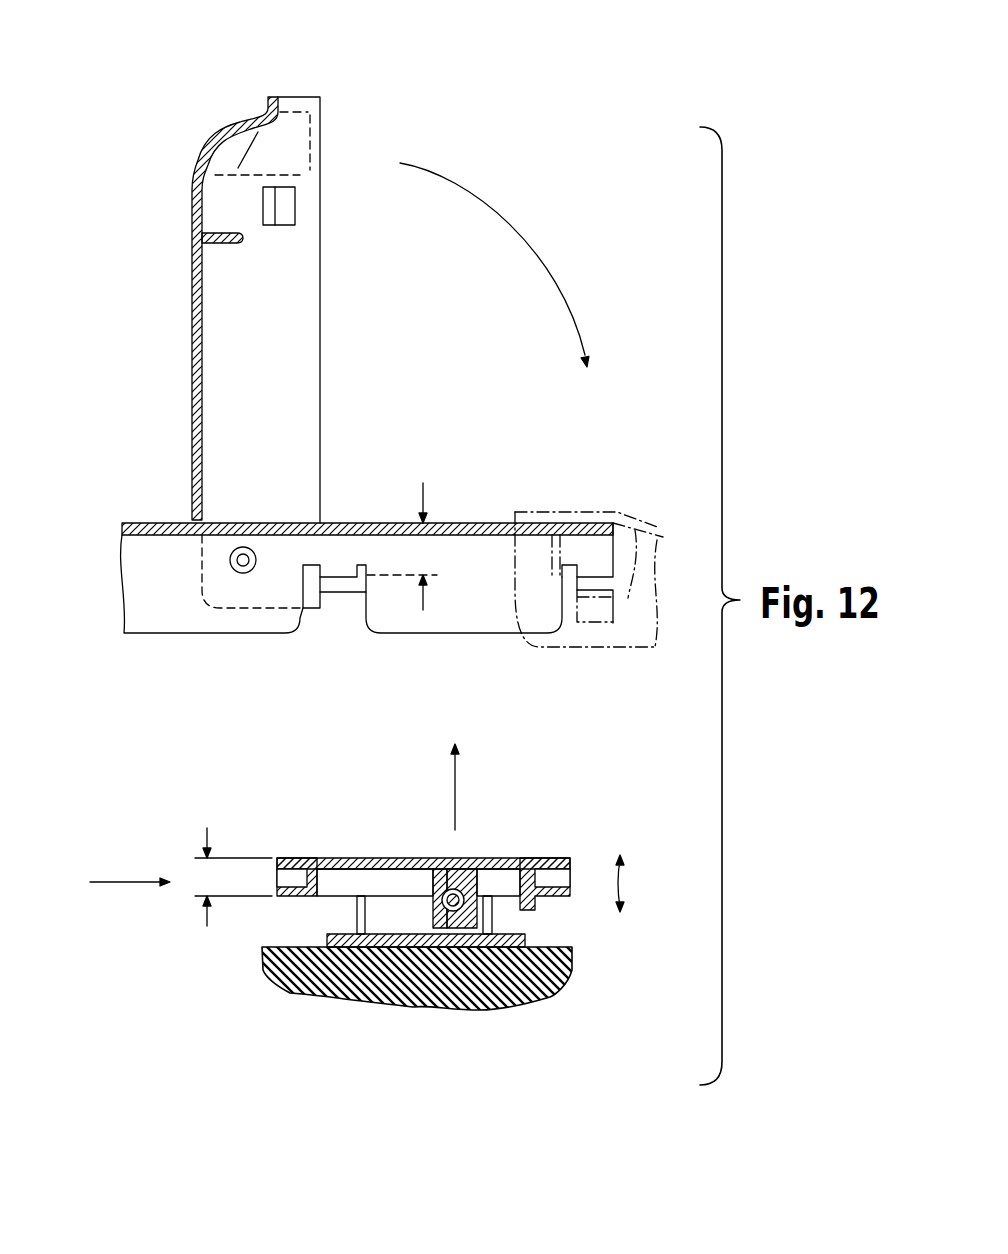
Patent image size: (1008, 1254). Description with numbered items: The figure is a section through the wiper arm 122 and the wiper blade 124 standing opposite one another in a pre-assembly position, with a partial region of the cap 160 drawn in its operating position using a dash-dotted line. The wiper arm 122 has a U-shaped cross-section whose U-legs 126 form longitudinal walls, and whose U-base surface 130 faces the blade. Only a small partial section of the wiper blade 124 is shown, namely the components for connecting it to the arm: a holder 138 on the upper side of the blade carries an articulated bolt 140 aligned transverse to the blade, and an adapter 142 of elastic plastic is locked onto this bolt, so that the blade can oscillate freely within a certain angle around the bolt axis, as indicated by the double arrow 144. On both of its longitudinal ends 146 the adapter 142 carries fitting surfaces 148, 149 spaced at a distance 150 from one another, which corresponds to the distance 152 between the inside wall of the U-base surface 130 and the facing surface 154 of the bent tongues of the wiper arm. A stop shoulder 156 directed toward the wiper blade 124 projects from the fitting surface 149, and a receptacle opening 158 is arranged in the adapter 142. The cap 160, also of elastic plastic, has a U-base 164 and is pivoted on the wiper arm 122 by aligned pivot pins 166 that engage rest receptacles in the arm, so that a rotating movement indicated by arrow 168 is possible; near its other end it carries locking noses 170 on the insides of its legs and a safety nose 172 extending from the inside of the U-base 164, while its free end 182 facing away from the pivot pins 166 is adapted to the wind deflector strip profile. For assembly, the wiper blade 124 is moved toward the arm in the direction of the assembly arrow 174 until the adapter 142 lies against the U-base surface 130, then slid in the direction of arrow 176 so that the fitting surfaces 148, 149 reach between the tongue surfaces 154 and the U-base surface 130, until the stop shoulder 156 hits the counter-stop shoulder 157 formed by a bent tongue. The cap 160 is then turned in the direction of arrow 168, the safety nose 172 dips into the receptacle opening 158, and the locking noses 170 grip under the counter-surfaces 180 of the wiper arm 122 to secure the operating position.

The wiper arm 122 is at (118, 582).
The wiper blade 124 is at (288, 1010).
The U-legs 126 is at (138, 608).
The U-base surface 130 is at (380, 523).
The holder 138 is at (340, 919).
The articulated bolt 140 is at (448, 858).
The adapter 142 is at (520, 858).
The double arrow 144 is at (623, 882).
The longitudinal ends 146 is at (290, 858).
The fitting surface 148 is at (315, 858).
The fitting surface 149 is at (277, 893).
The distance 150 is at (205, 830).
The distance 152 is at (425, 497).
The surface 154 is at (342, 523).
The stop shoulder 156 is at (498, 918).
The counter-stop shoulder 157 is at (565, 580).
The receptacle opening 158 is at (558, 948).
The cap 160 is at (180, 345).
The U-base 164 is at (190, 403).
The pivot pins 166 is at (243, 563).
The arrow 168 is at (500, 210).
The locking nose 170 is at (287, 205).
The safety nose 172 is at (237, 242).
The assembly arrow 174 is at (452, 792).
The arrow 176 is at (98, 888).
The counter-surfaces 180 is at (598, 590).
The free end 182 is at (302, 82).